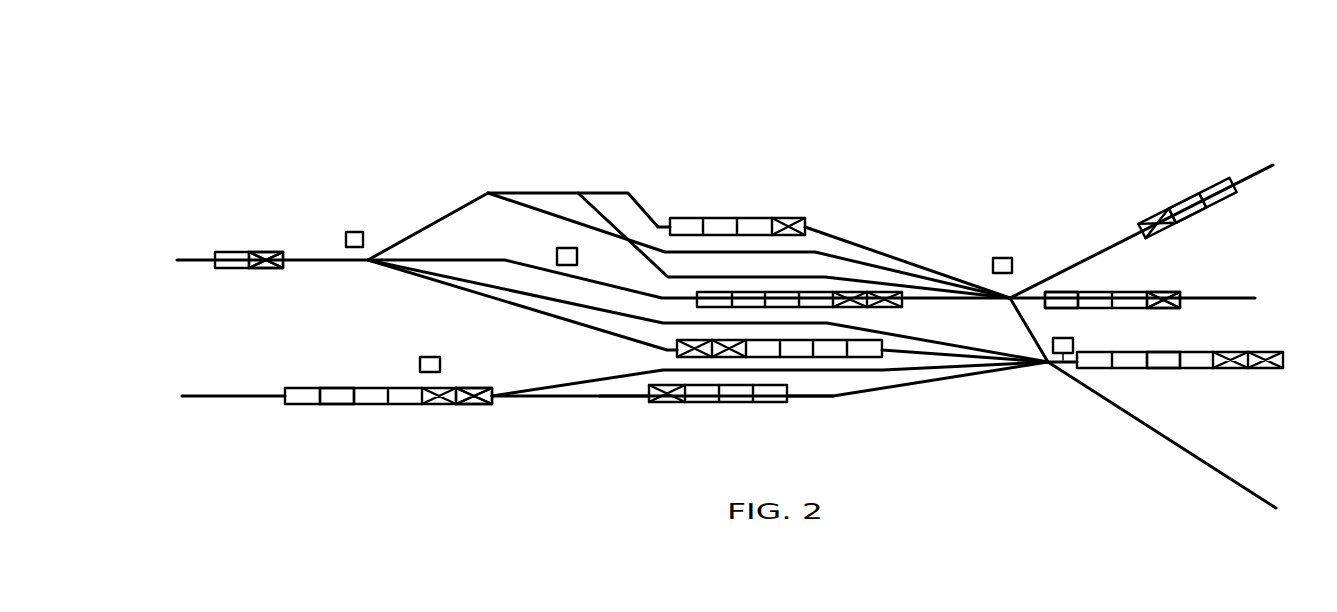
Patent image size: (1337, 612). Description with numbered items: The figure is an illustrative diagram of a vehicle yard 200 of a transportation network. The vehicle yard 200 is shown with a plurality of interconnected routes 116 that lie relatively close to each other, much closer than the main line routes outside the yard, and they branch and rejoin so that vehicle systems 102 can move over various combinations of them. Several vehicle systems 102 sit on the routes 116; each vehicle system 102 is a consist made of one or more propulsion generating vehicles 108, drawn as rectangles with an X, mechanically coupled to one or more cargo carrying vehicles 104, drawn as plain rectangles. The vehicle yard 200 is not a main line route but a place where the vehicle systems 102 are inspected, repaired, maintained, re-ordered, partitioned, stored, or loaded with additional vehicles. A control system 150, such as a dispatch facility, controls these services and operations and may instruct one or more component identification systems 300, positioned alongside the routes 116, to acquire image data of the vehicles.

The vehicle yard 200 is at (334, 96).
The vehicle system 102 is at (754, 313).
The cargo carrying vehicle 104 is at (336, 387).
The propulsion generating vehicle 108 is at (265, 269).
The interconnected route 116 is at (853, 398).
The control system 150 is at (557, 250).
The component identification system 300 is at (353, 231).